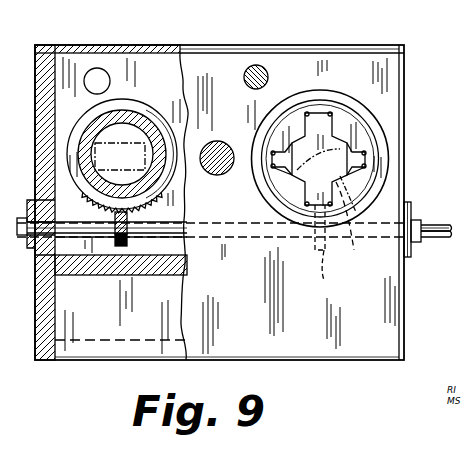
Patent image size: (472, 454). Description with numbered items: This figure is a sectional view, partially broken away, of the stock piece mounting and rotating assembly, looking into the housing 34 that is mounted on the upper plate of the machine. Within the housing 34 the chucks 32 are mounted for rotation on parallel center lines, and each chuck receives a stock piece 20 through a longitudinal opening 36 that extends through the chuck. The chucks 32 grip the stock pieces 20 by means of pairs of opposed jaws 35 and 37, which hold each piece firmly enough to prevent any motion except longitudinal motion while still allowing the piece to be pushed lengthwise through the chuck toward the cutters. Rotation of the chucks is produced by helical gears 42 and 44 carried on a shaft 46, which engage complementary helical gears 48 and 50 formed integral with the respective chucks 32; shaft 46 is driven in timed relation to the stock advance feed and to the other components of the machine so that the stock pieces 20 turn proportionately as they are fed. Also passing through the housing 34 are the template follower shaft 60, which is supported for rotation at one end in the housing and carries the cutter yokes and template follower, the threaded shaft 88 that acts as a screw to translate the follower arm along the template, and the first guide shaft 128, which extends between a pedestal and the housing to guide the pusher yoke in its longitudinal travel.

The stock piece 20 is at (162, 192).
The chuck 32 is at (74, 146).
The housing 34 is at (400, 95).
The jaw 35 is at (307, 122).
The longitudinal opening 36 is at (119, 125).
The jaw 37 is at (357, 150).
The helical gear 42 is at (129, 239).
The helical gear 44 is at (332, 249).
The shaft 46 is at (436, 240).
The complementary helical gear 48 is at (96, 210).
The complementary helical gear 50 is at (355, 252).
The template follower shaft 60 is at (220, 150).
The shaft (screw) 88 is at (258, 65).
The first guide shaft 128 is at (99, 74).